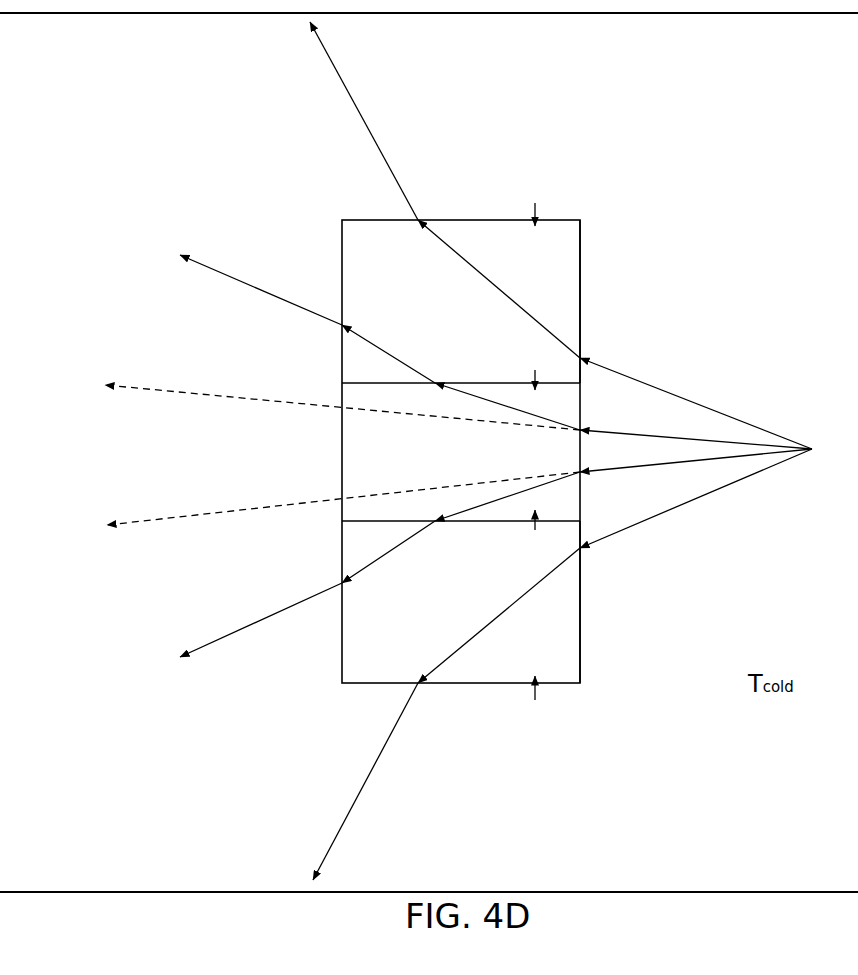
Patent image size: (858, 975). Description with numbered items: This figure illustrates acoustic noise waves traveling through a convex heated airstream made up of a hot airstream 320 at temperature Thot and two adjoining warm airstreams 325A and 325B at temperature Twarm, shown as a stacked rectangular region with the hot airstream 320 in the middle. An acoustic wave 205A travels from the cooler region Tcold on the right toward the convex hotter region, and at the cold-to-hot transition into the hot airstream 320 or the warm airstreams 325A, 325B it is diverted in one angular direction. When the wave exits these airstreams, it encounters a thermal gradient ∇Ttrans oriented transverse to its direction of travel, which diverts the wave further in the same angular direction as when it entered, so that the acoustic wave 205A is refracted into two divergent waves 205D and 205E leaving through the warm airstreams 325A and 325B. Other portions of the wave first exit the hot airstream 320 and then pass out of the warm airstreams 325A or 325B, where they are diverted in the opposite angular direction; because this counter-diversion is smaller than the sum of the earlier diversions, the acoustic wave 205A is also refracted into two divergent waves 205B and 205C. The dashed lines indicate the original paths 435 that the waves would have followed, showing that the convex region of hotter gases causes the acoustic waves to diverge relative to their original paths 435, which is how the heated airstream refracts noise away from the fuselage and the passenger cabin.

The acoustic wave 205A is at (731, 414).
The divergent acoustic wave 205B is at (362, 341).
The divergent acoustic wave 205C is at (365, 566).
The divergent acoustic wave 205D is at (366, 117).
The divergent acoustic wave 205E is at (359, 805).
The hot airstream 320 is at (335, 451).
The warm airstream 325A is at (588, 285).
The warm airstream 325B is at (588, 645).
The original path 435 is at (140, 394).